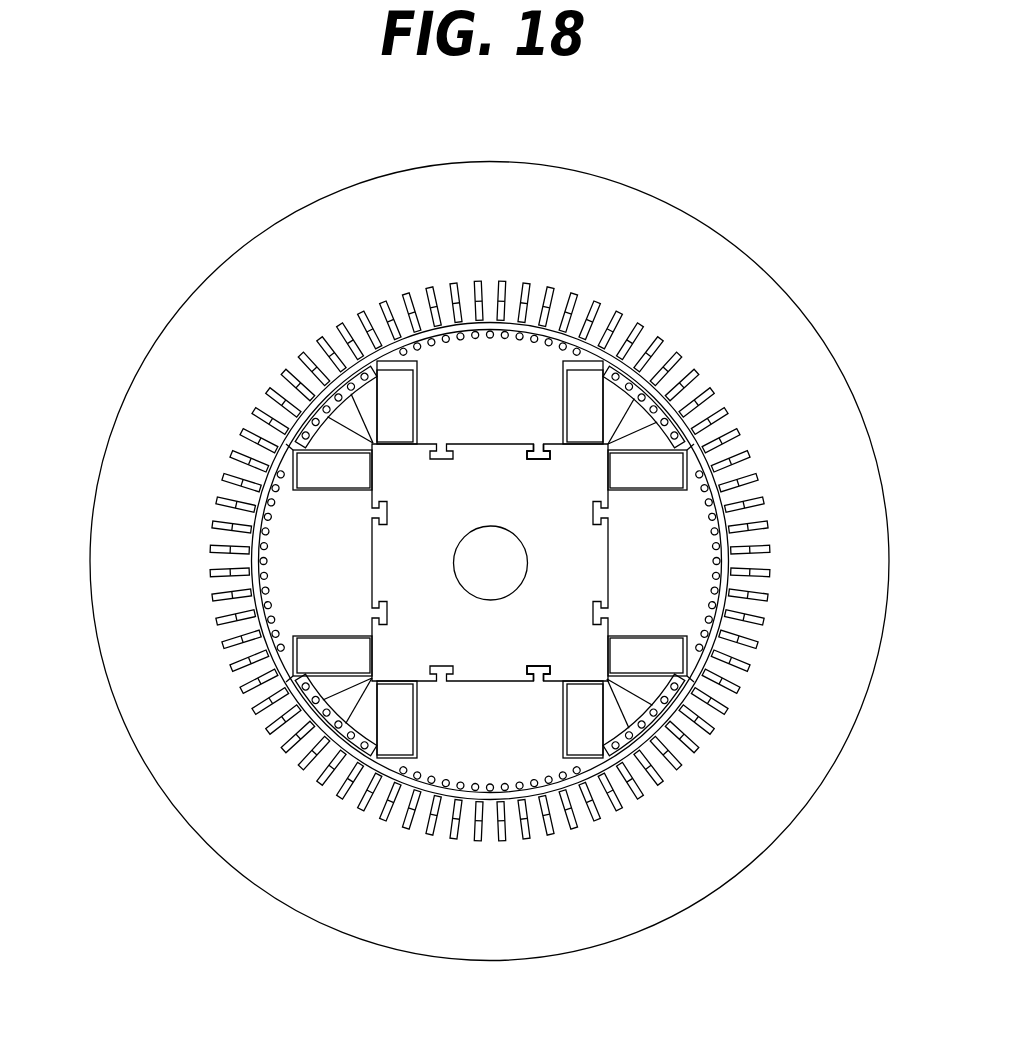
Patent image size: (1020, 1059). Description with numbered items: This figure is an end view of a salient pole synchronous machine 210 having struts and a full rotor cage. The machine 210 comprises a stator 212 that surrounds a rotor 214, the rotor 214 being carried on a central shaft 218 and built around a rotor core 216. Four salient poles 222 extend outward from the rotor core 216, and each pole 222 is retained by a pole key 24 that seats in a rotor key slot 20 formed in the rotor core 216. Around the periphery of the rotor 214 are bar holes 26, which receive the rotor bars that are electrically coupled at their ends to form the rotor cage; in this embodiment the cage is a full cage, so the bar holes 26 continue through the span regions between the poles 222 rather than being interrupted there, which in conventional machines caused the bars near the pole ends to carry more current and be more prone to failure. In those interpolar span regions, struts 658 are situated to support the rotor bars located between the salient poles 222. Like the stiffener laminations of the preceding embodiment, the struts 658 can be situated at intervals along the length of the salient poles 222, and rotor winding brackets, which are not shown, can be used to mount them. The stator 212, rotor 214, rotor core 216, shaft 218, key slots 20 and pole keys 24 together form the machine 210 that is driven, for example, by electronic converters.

The machine 210 is at (186, 238).
The stator 212 is at (466, 229).
The rotor 214 is at (356, 400).
The rotor core 216 is at (516, 501).
The shaft 218 is at (465, 579).
The rotor key slot 20 is at (548, 460).
The pole key 24 is at (542, 460).
The bar holes 26 is at (713, 537).
The poles 222 is at (465, 421).
The struts 658 is at (633, 435).